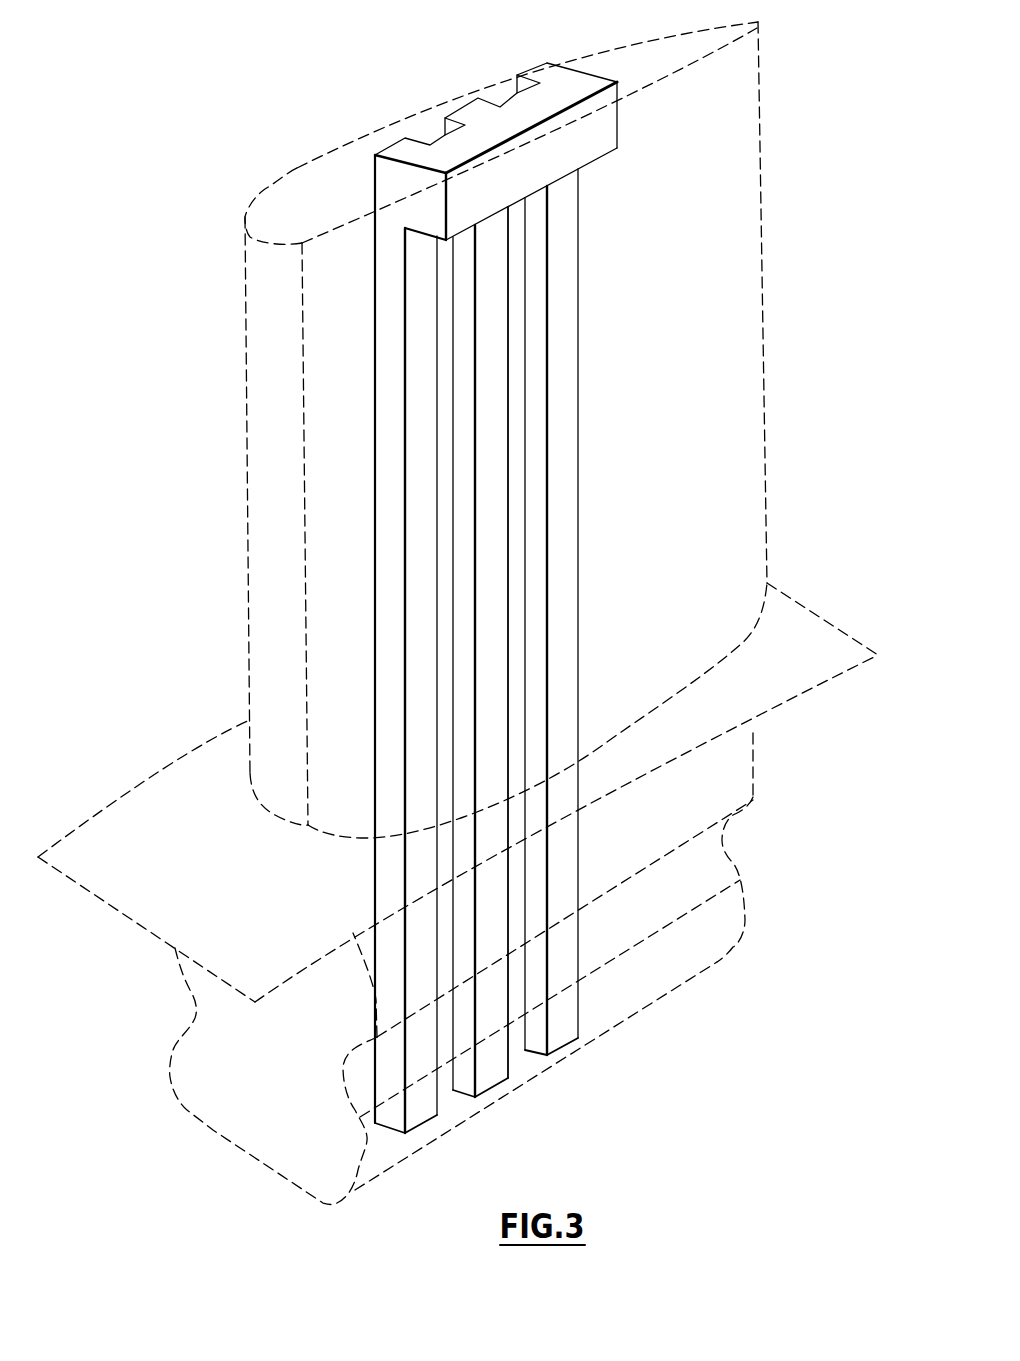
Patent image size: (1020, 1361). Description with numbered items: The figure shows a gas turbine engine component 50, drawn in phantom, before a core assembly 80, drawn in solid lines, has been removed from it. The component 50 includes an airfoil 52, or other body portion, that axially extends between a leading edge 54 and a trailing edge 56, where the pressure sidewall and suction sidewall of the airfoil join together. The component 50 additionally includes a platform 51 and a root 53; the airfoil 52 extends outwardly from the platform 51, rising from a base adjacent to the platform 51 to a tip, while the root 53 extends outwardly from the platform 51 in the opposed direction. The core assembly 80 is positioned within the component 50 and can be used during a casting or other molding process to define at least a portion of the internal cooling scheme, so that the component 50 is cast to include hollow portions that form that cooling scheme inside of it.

The component 50 is at (812, 79).
The platform 51 is at (798, 652).
The airfoil 52 is at (708, 476).
The root 53 is at (722, 867).
The leading edge 54 is at (298, 566).
The trailing edge 56 is at (775, 252).
The core assembly 80 is at (580, 78).